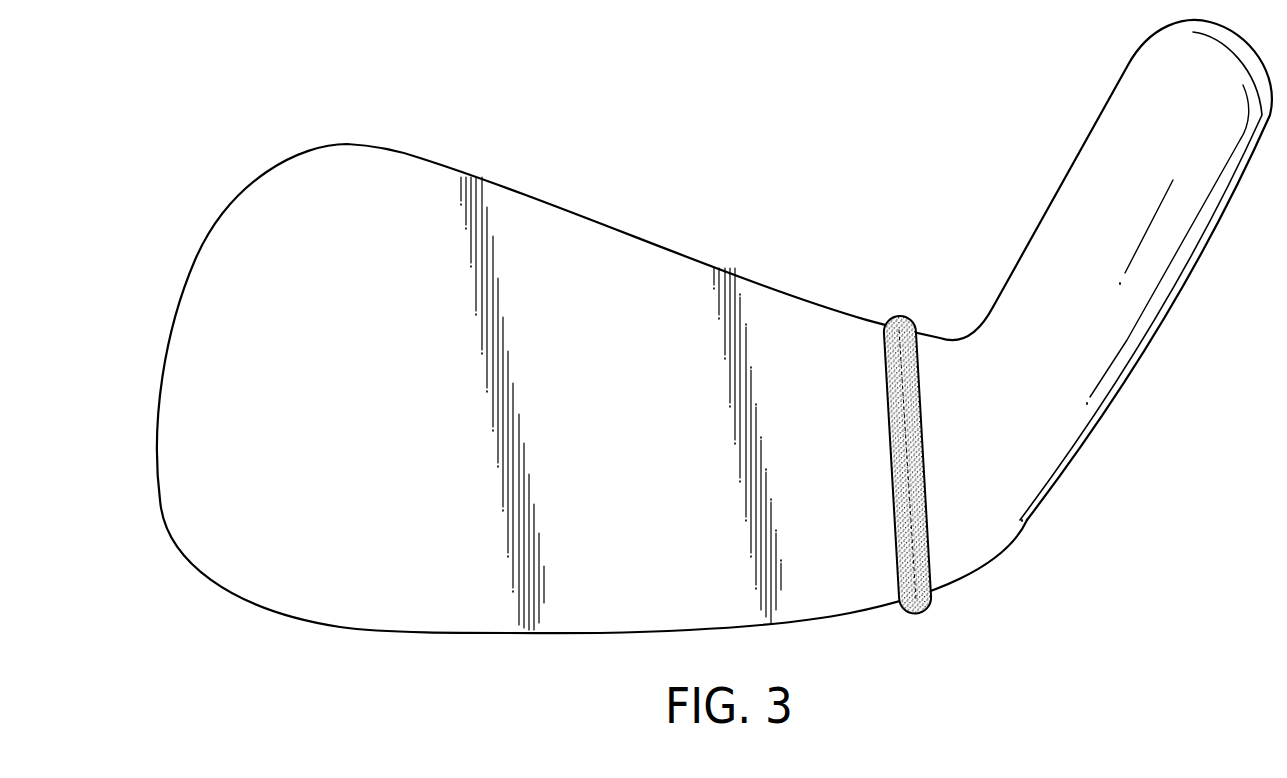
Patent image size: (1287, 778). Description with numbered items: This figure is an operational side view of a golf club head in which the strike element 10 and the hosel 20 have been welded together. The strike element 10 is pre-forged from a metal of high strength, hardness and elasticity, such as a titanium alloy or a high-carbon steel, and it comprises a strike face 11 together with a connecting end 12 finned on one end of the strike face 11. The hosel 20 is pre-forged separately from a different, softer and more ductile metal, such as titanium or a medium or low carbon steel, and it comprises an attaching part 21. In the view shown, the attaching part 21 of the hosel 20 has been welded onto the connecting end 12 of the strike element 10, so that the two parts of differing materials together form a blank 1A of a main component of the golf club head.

The blank 1A is at (714, 360).
The strike element 10 is at (592, 422).
The strike face 11 is at (478, 574).
The connecting end 12 is at (886, 513).
The hosel 20 is at (1040, 202).
The attaching part 21 is at (935, 506).